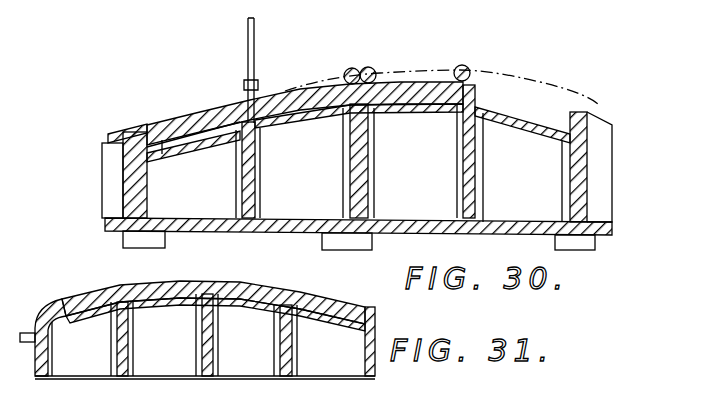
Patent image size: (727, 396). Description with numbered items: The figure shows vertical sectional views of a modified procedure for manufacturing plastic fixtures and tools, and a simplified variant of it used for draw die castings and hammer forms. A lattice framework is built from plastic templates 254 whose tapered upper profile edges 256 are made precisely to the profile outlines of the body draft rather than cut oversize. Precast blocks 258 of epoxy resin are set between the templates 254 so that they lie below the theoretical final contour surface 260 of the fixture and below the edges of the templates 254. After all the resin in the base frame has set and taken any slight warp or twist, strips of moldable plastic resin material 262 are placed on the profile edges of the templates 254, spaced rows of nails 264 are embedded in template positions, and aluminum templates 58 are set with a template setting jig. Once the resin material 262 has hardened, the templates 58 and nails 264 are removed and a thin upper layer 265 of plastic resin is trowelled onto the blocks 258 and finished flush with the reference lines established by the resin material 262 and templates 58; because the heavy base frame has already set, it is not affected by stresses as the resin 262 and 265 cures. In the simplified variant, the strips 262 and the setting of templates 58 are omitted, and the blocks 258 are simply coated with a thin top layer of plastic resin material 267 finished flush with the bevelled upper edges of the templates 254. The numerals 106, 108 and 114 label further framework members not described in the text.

In FIG. 30, the aluminum templates 58 is at (248, 36).
In FIG. 30, the support post 106 is at (262, 184).
In FIG. 31, the support post 106 is at (213, 369).
In FIG. 30, the thin layer strip 108 is at (290, 126).
In FIG. 31, the thin layer strip 108 is at (146, 316).
In FIG. 30, the side member 114 is at (282, 140).
In FIG. 31, the side member 114 is at (310, 322).
In FIG. 30, the plastic templates 254 is at (362, 162).
In FIG. 31, the plastic templates 254 is at (126, 352).
In FIG. 30, the tapered upper profile edges 256 is at (471, 84).
In FIG. 30, the precast blocks 258 is at (322, 93).
In FIG. 31, the precast blocks 258 is at (182, 290).
In FIG. 30, the theoretical final contour surface 260 is at (549, 87).
In FIG. 30, the strips of plastic resin material 262 is at (135, 128).
In FIG. 30, the nails 264 is at (246, 84).
In FIG. 30, the thin upper layer of plastic resin material 265 is at (176, 112).
In FIG. 31, the thin top layer of plastic resin material 267 is at (68, 300).